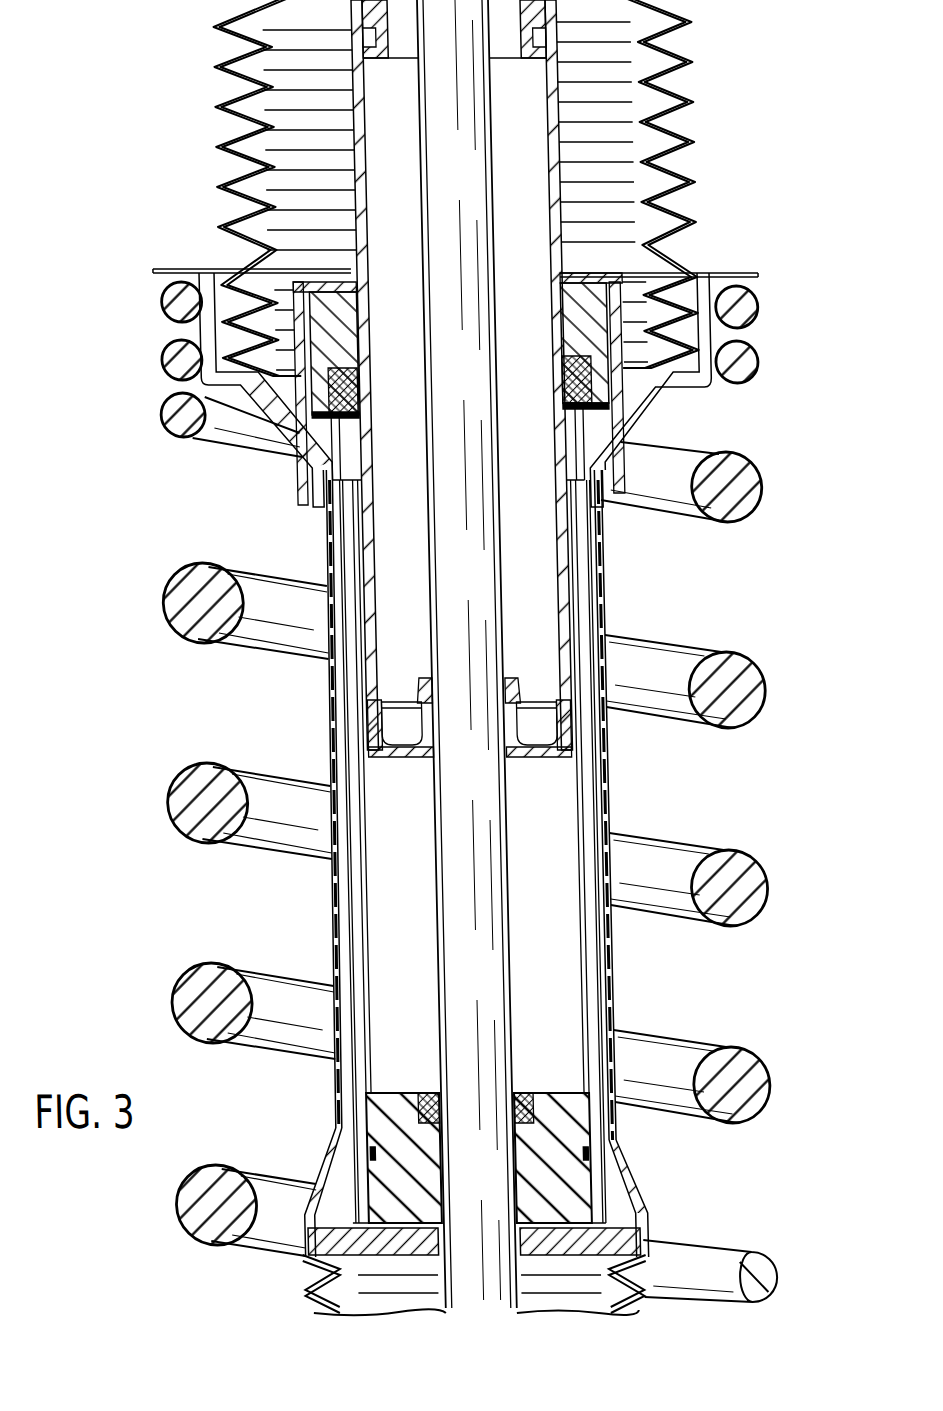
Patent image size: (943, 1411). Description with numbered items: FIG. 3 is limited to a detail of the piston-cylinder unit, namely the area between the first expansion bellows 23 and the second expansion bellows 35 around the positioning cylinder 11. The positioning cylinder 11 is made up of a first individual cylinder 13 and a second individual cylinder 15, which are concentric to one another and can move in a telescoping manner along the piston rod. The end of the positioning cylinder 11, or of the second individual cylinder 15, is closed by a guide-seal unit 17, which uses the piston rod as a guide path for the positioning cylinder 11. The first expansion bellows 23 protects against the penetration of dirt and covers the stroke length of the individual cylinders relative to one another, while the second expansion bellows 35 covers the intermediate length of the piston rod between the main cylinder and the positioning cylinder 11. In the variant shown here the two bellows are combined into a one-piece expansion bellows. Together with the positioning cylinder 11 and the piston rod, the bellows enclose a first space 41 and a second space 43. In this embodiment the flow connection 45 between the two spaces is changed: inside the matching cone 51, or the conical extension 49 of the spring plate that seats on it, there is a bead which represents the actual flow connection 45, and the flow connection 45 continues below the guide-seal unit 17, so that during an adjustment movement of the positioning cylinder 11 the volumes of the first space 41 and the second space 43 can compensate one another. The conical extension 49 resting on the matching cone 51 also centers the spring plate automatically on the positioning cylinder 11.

The positioning cylinder 11 is at (475, 657).
The first individual cylinder 13 is at (655, 205).
The second individual cylinder 15 is at (569, 953).
The guide-seal unit 17 is at (505, 1082).
The first expansion bellows 23 is at (689, 140).
The second expansion bellows 35 is at (590, 770).
The first space 41 is at (596, 90).
The second space 43 is at (581, 1001).
The flow connection 45 is at (612, 490).
The conical extension 49 is at (630, 417).
The matching cone 51 is at (580, 433).